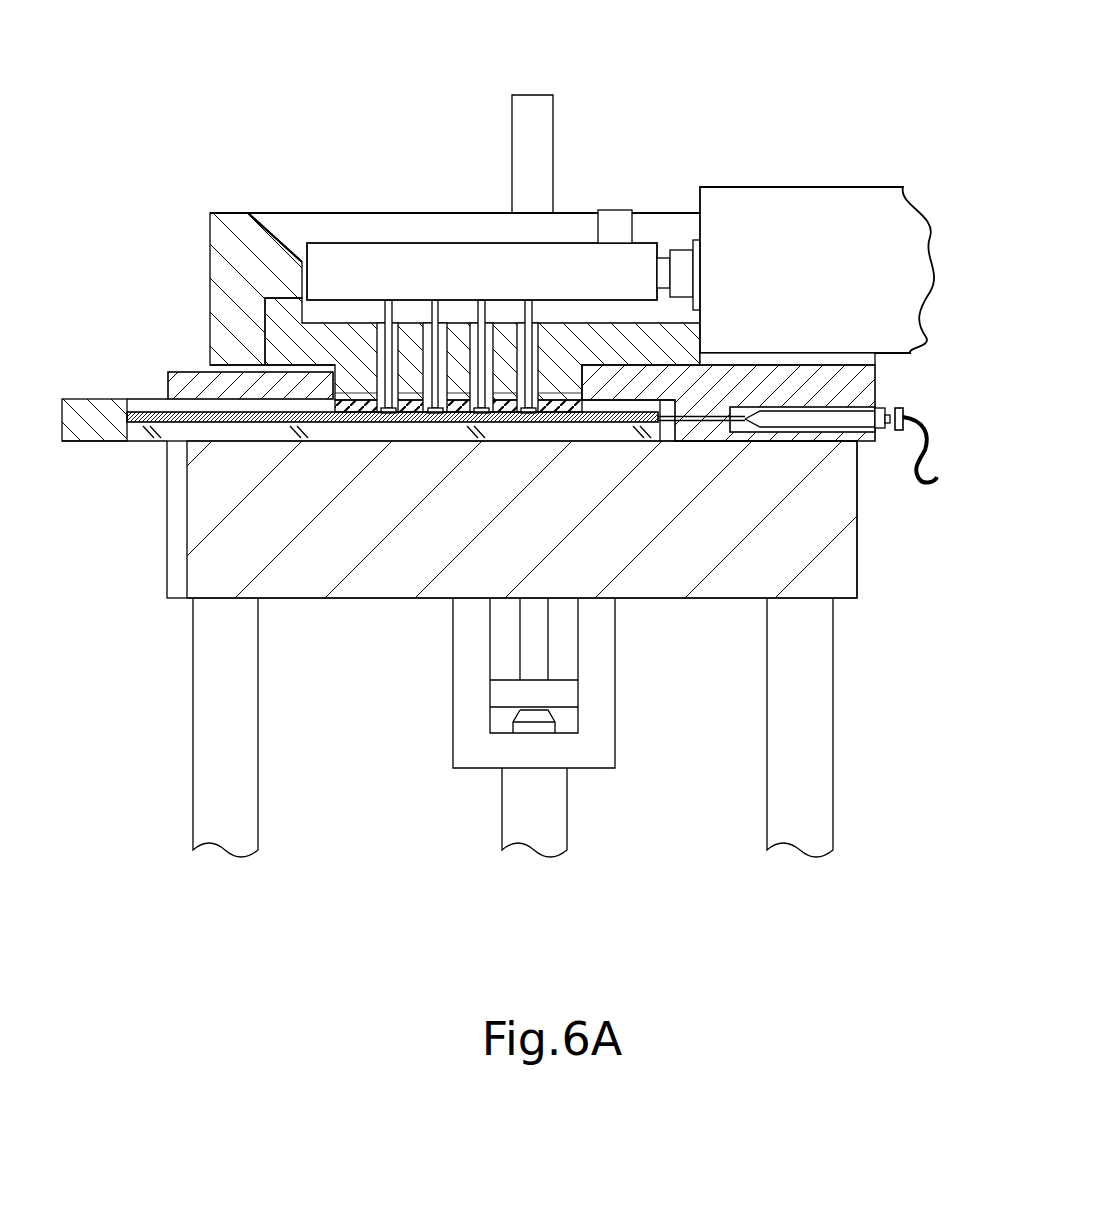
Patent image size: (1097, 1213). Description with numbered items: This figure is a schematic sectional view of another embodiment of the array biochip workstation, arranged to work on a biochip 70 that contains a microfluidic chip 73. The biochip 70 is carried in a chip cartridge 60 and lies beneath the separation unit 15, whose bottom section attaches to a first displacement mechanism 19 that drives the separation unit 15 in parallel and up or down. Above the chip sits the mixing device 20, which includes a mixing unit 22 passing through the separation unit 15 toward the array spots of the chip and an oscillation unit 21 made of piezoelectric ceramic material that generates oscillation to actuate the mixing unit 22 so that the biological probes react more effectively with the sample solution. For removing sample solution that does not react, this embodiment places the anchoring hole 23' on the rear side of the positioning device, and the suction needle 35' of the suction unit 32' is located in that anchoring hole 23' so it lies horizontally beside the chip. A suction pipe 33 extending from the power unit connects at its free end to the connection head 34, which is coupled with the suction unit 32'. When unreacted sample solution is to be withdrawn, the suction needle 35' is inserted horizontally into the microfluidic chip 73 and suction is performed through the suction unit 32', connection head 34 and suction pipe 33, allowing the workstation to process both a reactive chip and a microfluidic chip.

The separation unit 15 is at (205, 277).
The mixing unit 22 is at (352, 263).
The microfluidic chip 73 is at (515, 420).
The oscillation unit 21 is at (742, 230).
The mixing device 20 is at (882, 176).
The chip cartridge 60 is at (143, 398).
The biochip 70 is at (177, 438).
The connection head 34 is at (905, 412).
The suction pipe 33 is at (928, 445).
The suction unit 32' is at (828, 474).
The suction needle 35' is at (746, 478).
The anchoring hole 23' is at (784, 540).
The first displacement mechanism 19 is at (545, 828).